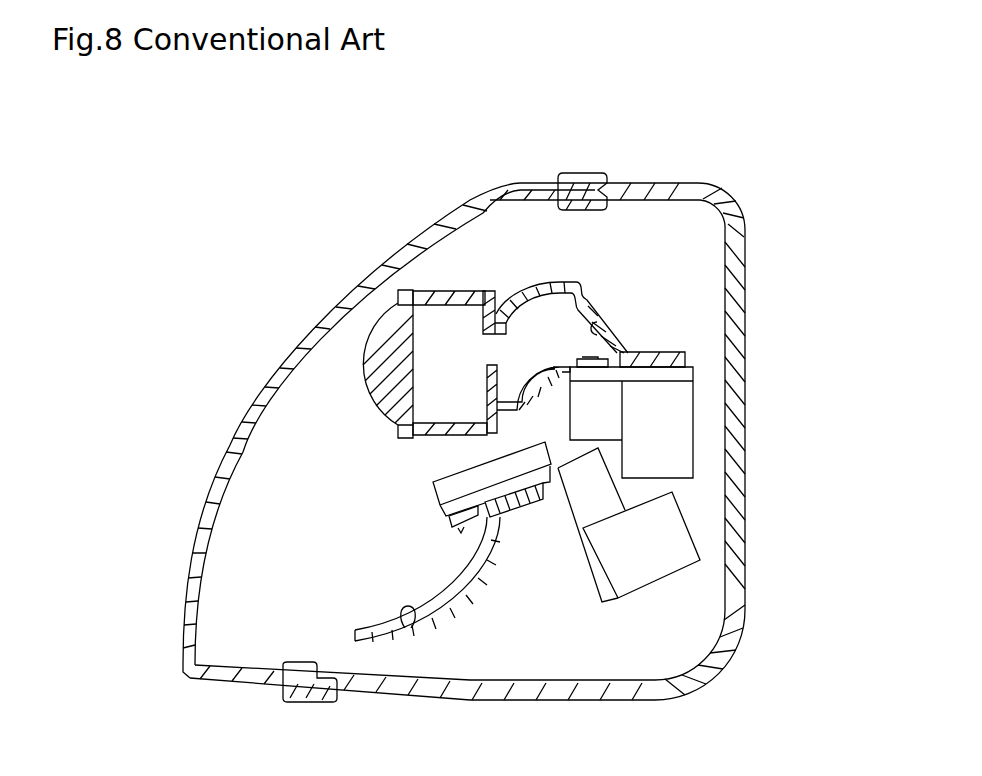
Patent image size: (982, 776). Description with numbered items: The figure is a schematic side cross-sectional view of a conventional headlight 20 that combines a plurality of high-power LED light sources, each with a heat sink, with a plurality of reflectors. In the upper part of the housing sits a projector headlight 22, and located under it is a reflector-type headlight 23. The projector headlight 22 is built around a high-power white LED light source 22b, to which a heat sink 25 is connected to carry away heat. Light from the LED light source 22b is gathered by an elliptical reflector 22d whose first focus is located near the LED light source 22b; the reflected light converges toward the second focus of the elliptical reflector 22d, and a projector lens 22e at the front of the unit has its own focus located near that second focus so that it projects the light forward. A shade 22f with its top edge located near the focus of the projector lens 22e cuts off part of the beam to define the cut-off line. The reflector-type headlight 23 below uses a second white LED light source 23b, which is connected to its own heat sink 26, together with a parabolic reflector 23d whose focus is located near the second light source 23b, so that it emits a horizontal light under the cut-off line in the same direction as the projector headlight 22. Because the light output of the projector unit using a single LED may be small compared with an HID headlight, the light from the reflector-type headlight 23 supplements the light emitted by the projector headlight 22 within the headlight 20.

The headlight 20 is at (717, 163).
The projector headlight 22 is at (637, 285).
The high-power LED light source 22b is at (598, 357).
The elliptical reflector 22d is at (610, 333).
The projector lens 22e is at (375, 350).
The shade 22f is at (488, 367).
The reflector-type headlight 23 is at (500, 597).
The second LED light source 23b is at (480, 526).
The parabolic reflector 23d is at (402, 623).
The heat sink 25 is at (680, 424).
The heat sink 26 is at (670, 535).